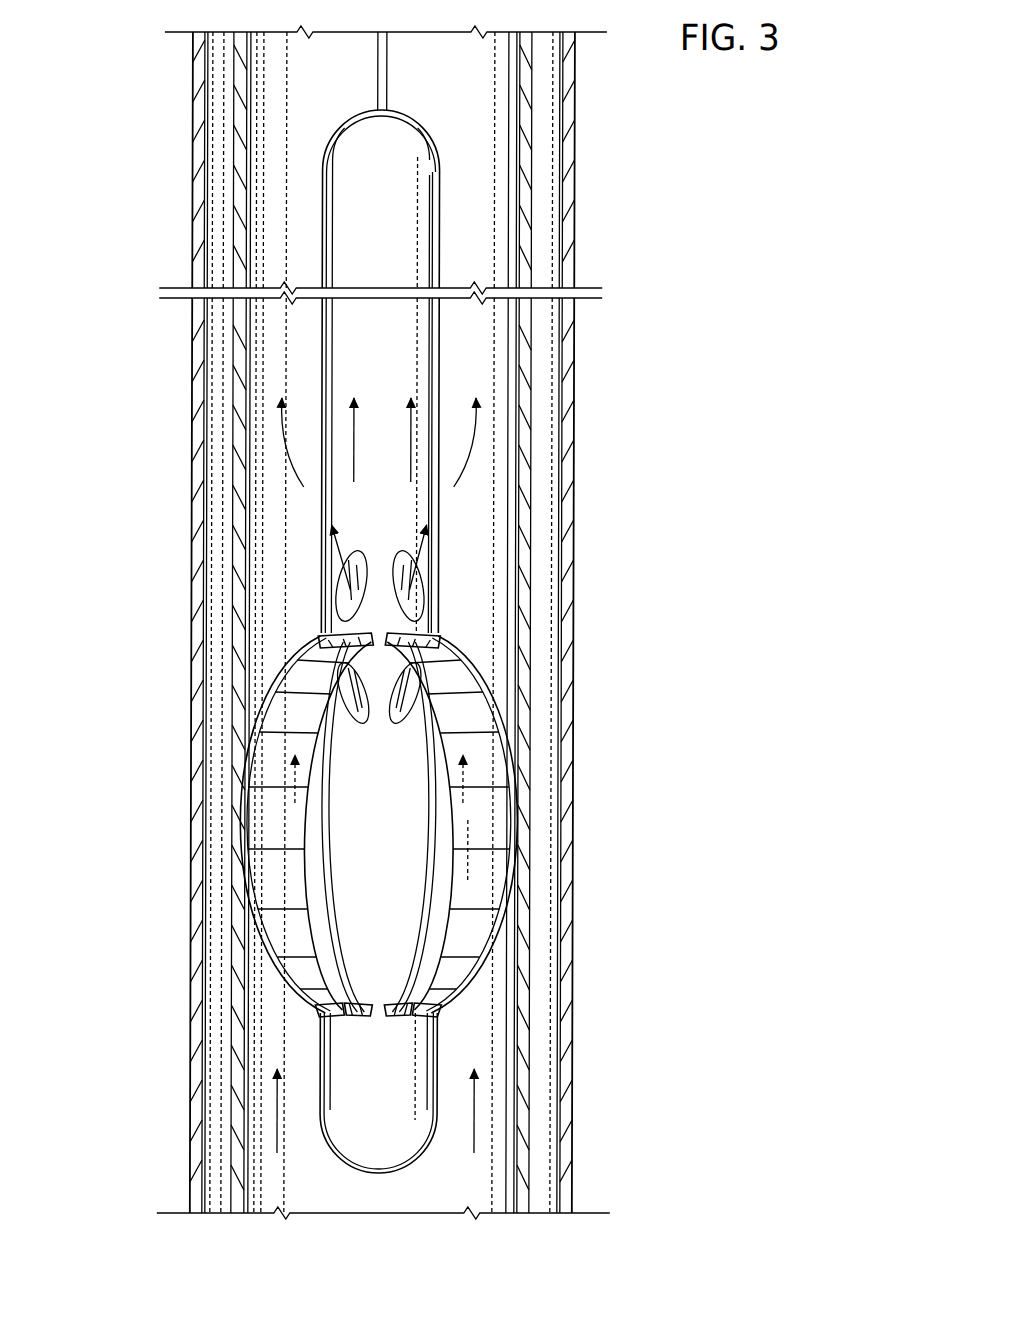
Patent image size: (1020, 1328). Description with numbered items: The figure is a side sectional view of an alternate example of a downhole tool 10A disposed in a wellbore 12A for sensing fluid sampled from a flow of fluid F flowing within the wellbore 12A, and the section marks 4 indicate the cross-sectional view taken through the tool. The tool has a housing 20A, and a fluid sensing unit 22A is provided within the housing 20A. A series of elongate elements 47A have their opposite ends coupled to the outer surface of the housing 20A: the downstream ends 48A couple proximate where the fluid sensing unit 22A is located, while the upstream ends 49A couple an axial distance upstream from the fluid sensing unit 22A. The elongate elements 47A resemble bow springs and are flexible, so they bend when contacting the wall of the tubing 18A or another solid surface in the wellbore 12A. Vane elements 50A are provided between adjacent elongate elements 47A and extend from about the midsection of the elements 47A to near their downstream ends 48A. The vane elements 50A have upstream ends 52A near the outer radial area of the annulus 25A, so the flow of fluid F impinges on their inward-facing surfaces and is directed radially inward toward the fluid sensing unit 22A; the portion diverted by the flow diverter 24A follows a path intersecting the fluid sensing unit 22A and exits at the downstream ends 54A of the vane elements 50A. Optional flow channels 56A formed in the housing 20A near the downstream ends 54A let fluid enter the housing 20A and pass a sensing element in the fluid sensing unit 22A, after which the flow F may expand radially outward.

The downhole tool 10A is at (468, 227).
The wellbore 12A is at (192, 1153).
The tubing 18A is at (528, 384).
The housing 20A is at (327, 217).
The fluid sensing unit 22A is at (437, 626).
The flow diverter 24A is at (223, 838).
The annulus 25A is at (285, 498).
The elongate elements 47A is at (480, 697).
The downstream ends 48A is at (433, 648).
The upstream ends 49A is at (327, 1003).
The vane elements 50A is at (463, 732).
The upstream ends 52A is at (480, 828).
The downstream ends 54A is at (323, 635).
The flow channels 56A is at (337, 588).
The flow of fluid F is at (478, 1113).
The section line 4 is at (102, 817).